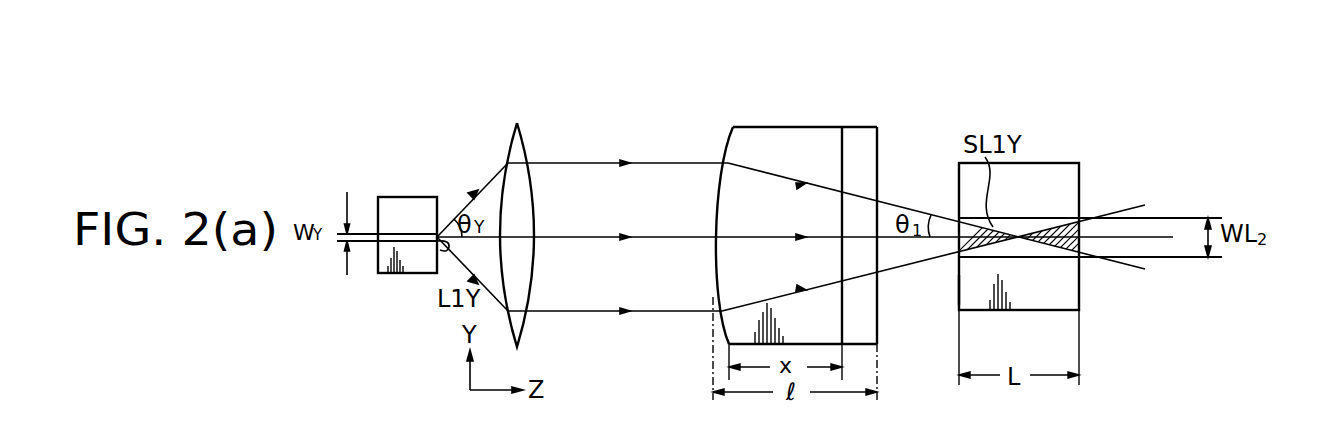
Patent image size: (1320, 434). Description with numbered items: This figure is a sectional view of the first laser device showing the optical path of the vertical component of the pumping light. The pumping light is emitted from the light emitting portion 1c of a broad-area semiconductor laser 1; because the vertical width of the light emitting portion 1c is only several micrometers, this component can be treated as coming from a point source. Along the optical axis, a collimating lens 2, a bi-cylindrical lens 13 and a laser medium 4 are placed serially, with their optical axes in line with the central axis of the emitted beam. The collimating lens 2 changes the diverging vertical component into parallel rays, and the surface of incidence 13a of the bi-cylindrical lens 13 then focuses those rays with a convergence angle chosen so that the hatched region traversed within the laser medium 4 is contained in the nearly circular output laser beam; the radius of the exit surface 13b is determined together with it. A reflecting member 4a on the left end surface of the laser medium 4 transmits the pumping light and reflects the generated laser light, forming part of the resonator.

The semiconductor laser 1 is at (420, 197).
The light emitting portion 1c is at (441, 250).
The collimating lens 2 is at (524, 142).
The bi-cylindrical lens 13 is at (802, 196).
The surface of incidence 13a is at (717, 192).
The surface of the bi-cylindrical lens 13b is at (878, 147).
The laser medium 4 is at (1072, 163).
The reflecting member 4a is at (951, 295).